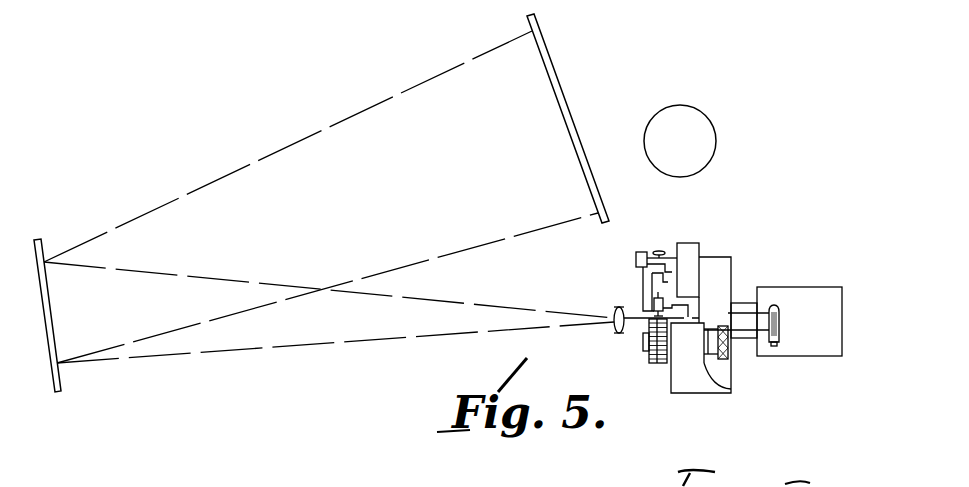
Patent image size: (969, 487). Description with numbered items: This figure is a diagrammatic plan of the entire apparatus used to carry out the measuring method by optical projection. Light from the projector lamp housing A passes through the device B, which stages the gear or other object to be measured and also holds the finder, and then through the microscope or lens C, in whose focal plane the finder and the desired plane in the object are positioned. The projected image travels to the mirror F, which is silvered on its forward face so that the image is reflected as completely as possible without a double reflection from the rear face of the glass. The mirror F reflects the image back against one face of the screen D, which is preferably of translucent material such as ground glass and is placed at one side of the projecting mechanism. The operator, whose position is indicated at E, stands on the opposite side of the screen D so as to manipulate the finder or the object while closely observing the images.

The projector lamp housing A is at (773, 321).
The device for staging the gear or other object B is at (718, 265).
The microscope or lens C is at (612, 310).
The screen D is at (575, 127).
The position of the operator E is at (680, 141).
The mirror F is at (53, 330).